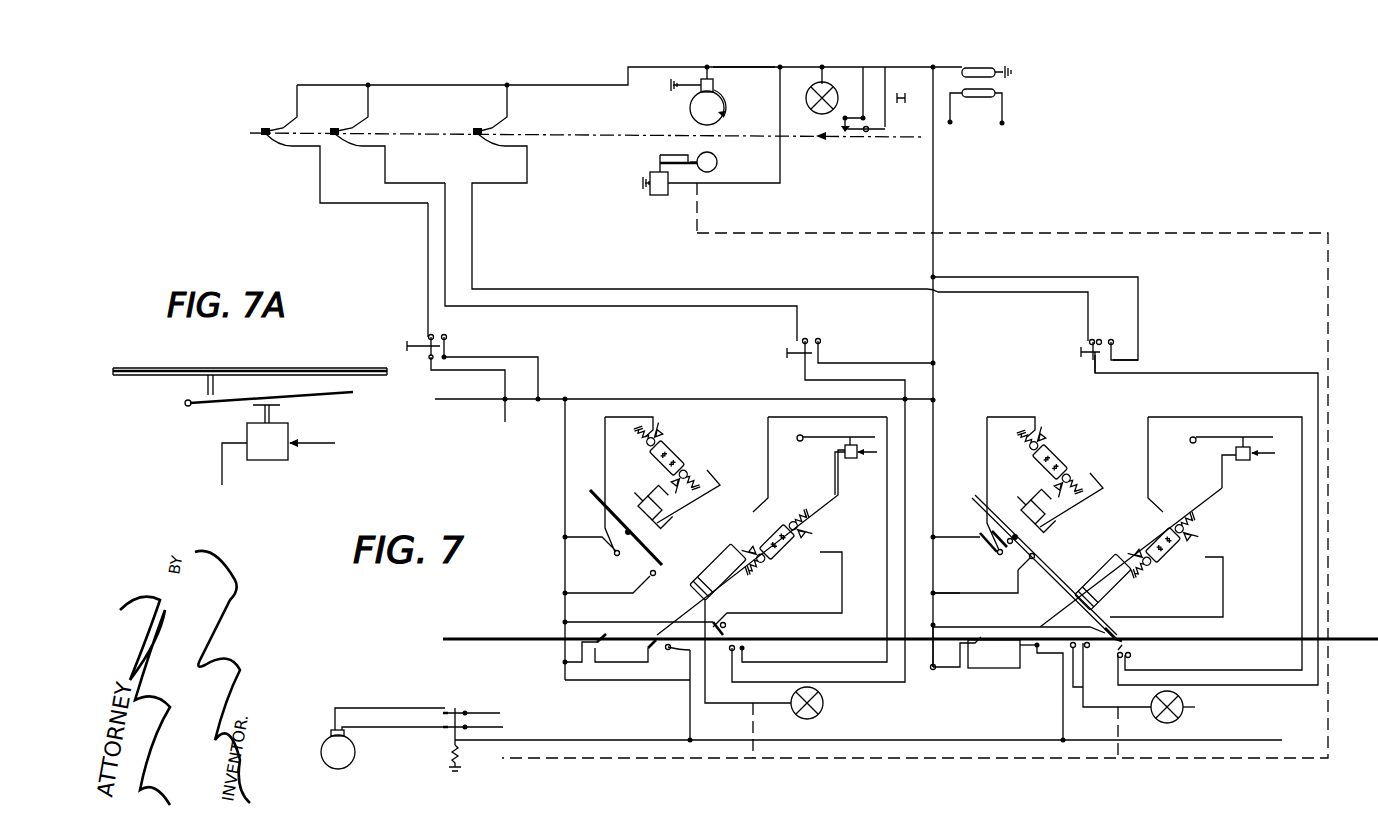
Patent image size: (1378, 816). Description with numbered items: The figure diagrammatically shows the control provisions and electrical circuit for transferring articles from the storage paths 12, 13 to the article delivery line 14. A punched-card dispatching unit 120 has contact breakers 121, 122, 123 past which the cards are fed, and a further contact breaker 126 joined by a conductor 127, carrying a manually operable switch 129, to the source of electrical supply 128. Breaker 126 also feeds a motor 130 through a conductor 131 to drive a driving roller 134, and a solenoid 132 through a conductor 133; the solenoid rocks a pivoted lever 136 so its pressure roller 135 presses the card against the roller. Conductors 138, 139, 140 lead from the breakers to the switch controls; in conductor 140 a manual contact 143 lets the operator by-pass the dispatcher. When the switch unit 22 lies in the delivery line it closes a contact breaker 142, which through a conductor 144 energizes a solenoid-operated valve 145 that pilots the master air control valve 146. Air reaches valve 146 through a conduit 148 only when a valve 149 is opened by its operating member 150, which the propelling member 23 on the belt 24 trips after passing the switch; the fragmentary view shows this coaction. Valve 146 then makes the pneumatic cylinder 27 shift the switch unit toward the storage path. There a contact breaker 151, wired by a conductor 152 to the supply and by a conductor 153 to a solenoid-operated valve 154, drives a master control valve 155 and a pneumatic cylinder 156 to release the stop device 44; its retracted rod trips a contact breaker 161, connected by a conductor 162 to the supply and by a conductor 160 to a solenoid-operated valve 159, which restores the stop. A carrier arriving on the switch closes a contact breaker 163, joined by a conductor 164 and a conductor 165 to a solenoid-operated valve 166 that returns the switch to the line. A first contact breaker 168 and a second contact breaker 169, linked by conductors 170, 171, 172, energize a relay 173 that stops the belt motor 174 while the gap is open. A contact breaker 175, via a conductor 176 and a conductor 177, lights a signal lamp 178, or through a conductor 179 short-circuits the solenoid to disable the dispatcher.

In FIG. 7, the storage path 12 is at (592, 488).
In FIG. 7, the storage path 13 is at (973, 498).
In FIG. 7, the article delivery line 14 is at (515, 637).
In FIG. 7, the switch unit 22 is at (665, 578).
In FIG. 7A, the propelling member 23 is at (206, 385).
In FIG. 7A, the belt 24 is at (226, 367).
In FIG. 7, the pneumatic cylinder 27 is at (709, 558).
In FIG. 7, the stop device 44 is at (1014, 547).
In FIG. 7, the dispatching unit 120 is at (547, 76).
In FIG. 7, the contact breaker 121 is at (483, 142).
In FIG. 7, the contact breaker 122 is at (349, 142).
In FIG. 7, the contact breaker 123 is at (271, 142).
In FIG. 7, the contact breaker 126 is at (852, 133).
In FIG. 7, the conductor 127 is at (886, 70).
In FIG. 7, the source of electrical supply 128 is at (998, 82).
In FIG. 7, the manually operable switch 129 is at (903, 108).
In FIG. 7, the motor 130 is at (700, 92).
In FIG. 7, the conductor 131 is at (737, 70).
In FIG. 7, the solenoid 132 is at (660, 197).
In FIG. 7, the conductor 133 is at (757, 183).
In FIG. 7, the driving roller 134 is at (725, 116).
In FIG. 7, the pressure roller 135 is at (717, 162).
In FIG. 7, the lever 136 is at (679, 159).
In FIG. 7, the conductor 138 is at (428, 247).
In FIG. 7, the conductor 139 is at (480, 306).
In FIG. 7, the conductor 140 is at (776, 289).
In FIG. 7, the contact breaker 142 is at (1132, 661).
In FIG. 7, the manual contact 143 is at (1088, 364).
In FIG. 7, the conductor 144 is at (1302, 592).
In FIG. 7, the solenoid-operated valve 145 is at (1156, 520).
In FIG. 7, the master air control valve 146 is at (1180, 544).
In FIG. 7, the conduit 148 is at (1222, 491).
In FIG. 7A, the conduit 148 is at (222, 478).
In FIG. 7, the valve 149 is at (1250, 462).
In FIG. 7A, the valve 149 is at (266, 457).
In FIG. 7, the operating member 150 is at (1226, 436).
In FIG. 7A, the operating member 150 is at (355, 393).
In FIG. 7, the contact breaker 151 is at (1012, 582).
In FIG. 7, the conductor 152 is at (966, 595).
In FIG. 7, the conductor 153 is at (1095, 500).
In FIG. 7, the solenoid-operated valve 154 is at (1078, 481).
In FIG. 7, the master control valve 155 is at (1063, 461).
In FIG. 7, the pneumatic cylinder 156 is at (1072, 521).
In FIG. 7, the solenoid-operated valve 159 is at (1042, 440).
In FIG. 7, the conductor 160 is at (987, 453).
In FIG. 7, the contact breaker 161 is at (990, 549).
In FIG. 7, the conductor 162 is at (979, 541).
In FIG. 7, the contact breaker 163 is at (1122, 631).
In FIG. 7, the conductor 164 is at (1040, 590).
In FIG. 7, the conductor 165 is at (1224, 611).
In FIG. 7, the solenoid-operated valve 166 is at (1200, 556).
In FIG. 7, the first contact breaker 168 is at (994, 654).
In FIG. 7, the second contact breaker 169 is at (1040, 660).
In FIG. 7, the conductor 170 is at (936, 670).
In FIG. 7, the conductor 171 is at (992, 670).
In FIG. 7, the conductor 172 is at (1063, 722).
In FIG. 7, the relay 173 is at (455, 708).
In FIG. 7, the motor 174 is at (323, 740).
In FIG. 7, the contact breaker 175 is at (1111, 675).
In FIG. 7, the conductor 176 is at (938, 683).
In FIG. 7, the conductor 177 is at (1130, 712).
In FIG. 7, the signal lamp 178 is at (1190, 709).
In FIG. 7, the conductor 179 is at (1008, 236).